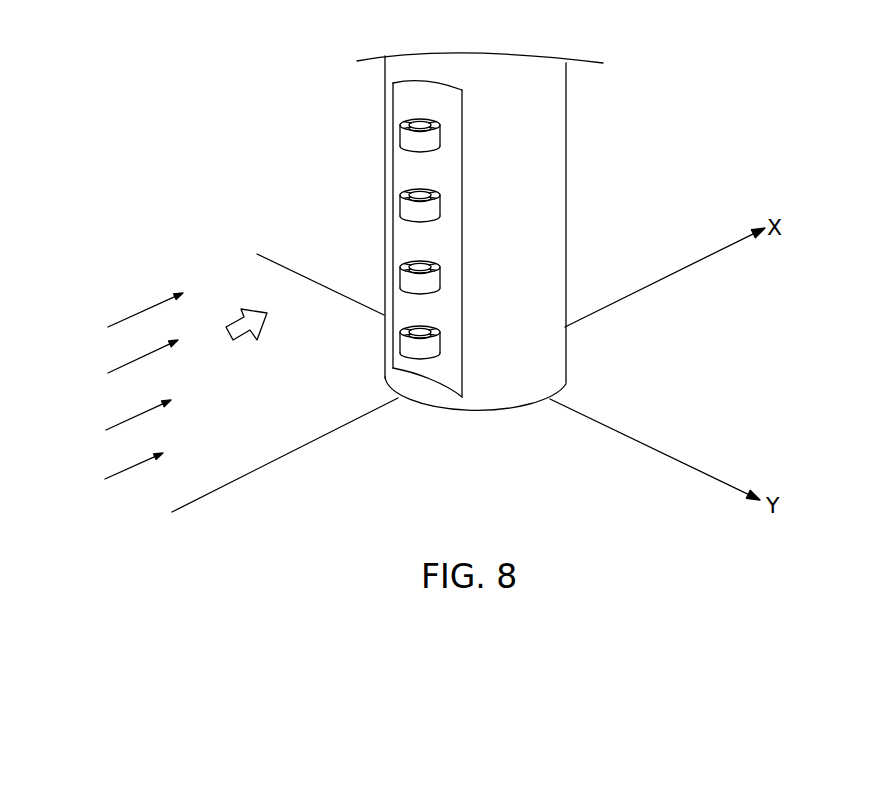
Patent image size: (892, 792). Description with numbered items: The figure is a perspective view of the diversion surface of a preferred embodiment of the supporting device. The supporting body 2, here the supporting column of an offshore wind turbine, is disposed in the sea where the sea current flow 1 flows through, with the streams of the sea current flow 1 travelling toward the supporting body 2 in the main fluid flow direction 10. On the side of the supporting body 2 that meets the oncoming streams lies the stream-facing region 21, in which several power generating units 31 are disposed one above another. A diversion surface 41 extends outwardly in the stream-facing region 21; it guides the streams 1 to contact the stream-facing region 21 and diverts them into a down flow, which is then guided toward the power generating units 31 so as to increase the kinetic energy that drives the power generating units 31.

The sea current flow 1 is at (135, 313).
The supporting body 2 is at (520, 72).
The main fluid flow direction 10 is at (246, 313).
The stream-facing region 21 is at (427, 68).
The power generating units 31 is at (418, 208).
The diversion surface 41 is at (405, 106).